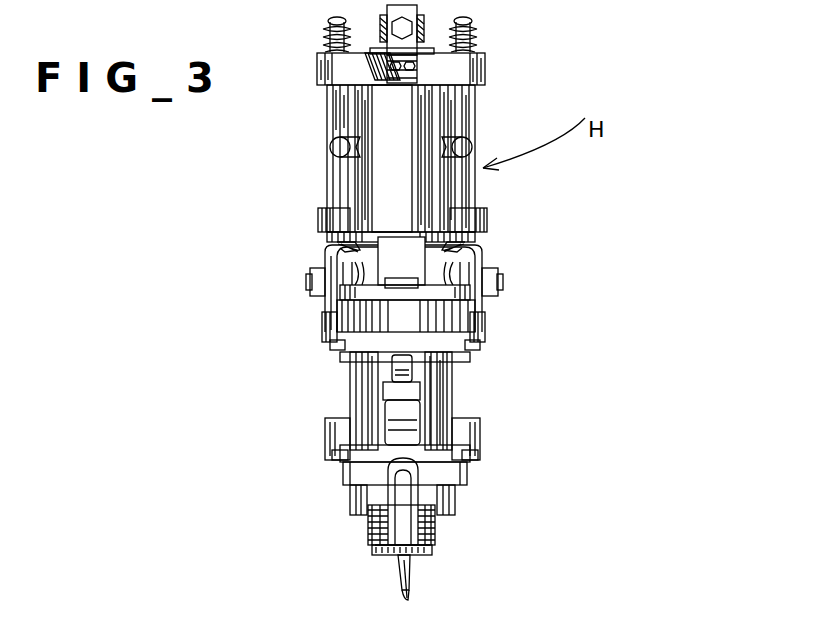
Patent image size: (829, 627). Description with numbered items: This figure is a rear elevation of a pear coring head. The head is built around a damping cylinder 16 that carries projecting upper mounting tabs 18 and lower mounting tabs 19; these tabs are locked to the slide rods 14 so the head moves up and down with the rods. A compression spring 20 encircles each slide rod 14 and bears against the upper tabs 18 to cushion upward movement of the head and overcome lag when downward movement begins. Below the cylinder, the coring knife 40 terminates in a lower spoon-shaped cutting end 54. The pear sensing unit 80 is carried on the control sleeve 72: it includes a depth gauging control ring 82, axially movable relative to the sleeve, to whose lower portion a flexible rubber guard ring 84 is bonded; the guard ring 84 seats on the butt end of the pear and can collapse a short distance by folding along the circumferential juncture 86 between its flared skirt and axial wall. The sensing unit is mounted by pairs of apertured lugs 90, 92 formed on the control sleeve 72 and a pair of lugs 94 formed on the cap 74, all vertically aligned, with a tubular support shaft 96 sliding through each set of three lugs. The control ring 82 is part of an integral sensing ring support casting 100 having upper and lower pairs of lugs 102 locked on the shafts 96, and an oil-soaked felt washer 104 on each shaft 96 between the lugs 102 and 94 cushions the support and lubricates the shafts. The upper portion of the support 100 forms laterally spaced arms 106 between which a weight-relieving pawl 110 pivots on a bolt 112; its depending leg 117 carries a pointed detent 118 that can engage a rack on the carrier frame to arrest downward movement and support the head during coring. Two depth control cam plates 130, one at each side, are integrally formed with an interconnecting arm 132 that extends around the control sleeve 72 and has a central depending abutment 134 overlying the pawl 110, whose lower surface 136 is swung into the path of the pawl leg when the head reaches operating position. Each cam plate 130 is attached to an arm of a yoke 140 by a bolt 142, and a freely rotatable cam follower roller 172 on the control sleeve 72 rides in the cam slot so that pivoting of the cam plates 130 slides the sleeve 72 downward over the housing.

The slide rod 14 is at (327, 123).
The damping cylinder 16 is at (404, 148).
The upper mounting tabs 18 is at (319, 85).
The lower mounting tabs 19 is at (318, 222).
The compression spring 20 is at (323, 36).
The coring knife 40 is at (400, 562).
The spoon-shaped cutting end 54 is at (398, 584).
The control sleeve 72 is at (446, 410).
The cap 74 is at (478, 440).
The pear sensing unit 80 is at (366, 525).
The control ring 82 is at (435, 527).
The rubber guard ring 84 is at (432, 552).
The circumferential juncture 86 is at (385, 548).
The apertured lugs 90 is at (348, 300).
The apertured lugs 92 is at (364, 372).
The apertured lugs 94 is at (348, 483).
The tubular support shaft 96 is at (352, 498).
The sensing ring support casting 100 is at (390, 418).
The lugs 102 is at (330, 345).
The felt washer 104 is at (352, 462).
The arms 106 is at (378, 388).
The weight-relieving pawl 110 is at (410, 336).
The bolt 112 is at (342, 358).
The depending leg 117 is at (418, 378).
The pointed detent 118 is at (392, 400).
The depth control cam plate 130 is at (332, 261).
The interconnecting arm 132 is at (350, 245).
The abutment 134 is at (398, 238).
The lower surface 136 is at (400, 280).
The yoke 140 is at (320, 272).
The bolt 142 is at (308, 288).
The cam follower roller 172 is at (322, 326).